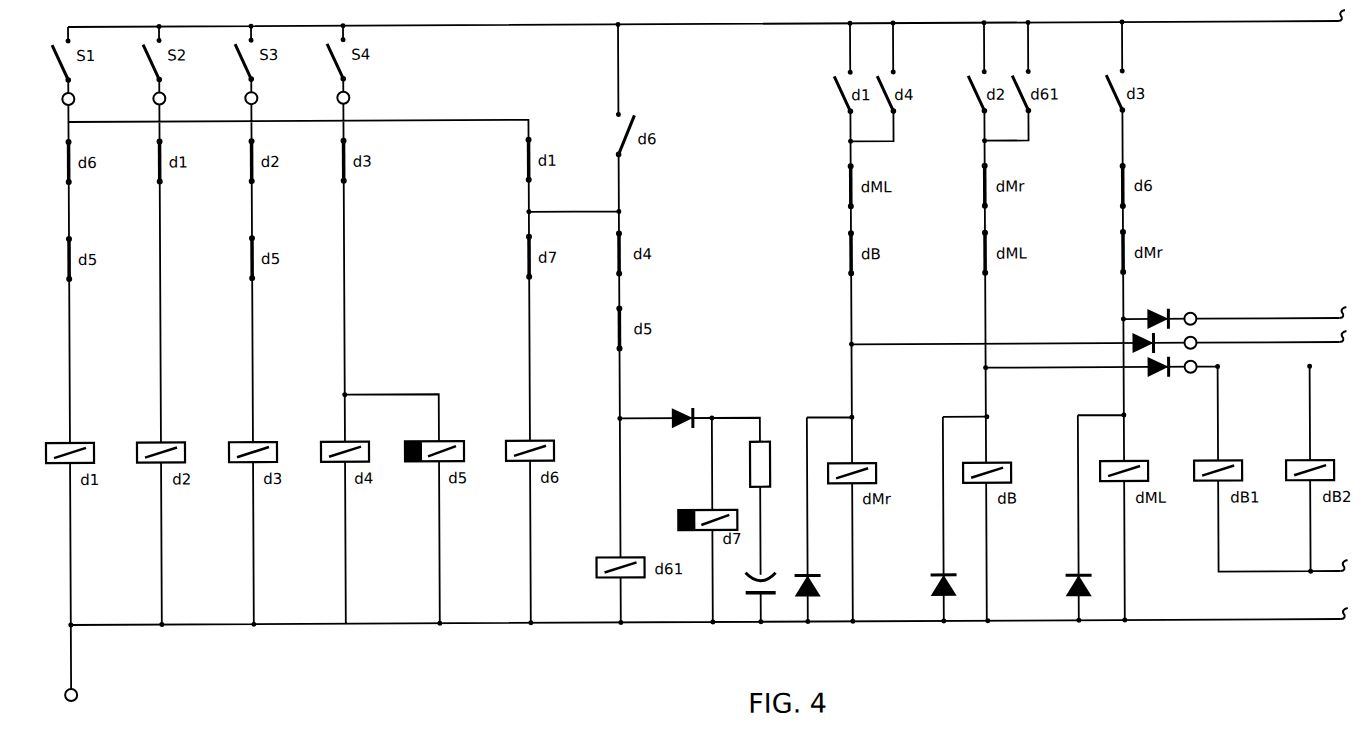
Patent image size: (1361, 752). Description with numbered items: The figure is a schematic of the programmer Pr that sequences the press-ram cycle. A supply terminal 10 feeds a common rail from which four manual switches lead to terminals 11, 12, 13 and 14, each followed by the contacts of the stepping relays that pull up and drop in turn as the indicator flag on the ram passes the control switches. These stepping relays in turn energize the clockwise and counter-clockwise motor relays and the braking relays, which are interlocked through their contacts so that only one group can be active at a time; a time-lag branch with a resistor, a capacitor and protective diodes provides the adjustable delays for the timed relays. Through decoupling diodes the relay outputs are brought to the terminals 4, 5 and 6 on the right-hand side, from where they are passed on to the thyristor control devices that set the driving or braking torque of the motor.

The supply input terminal 10 is at (56, 696).
The switch S1 output terminal 11 is at (79, 100).
The switch S2 output terminal 12 is at (170, 99).
The switch S3 output terminal 13 is at (262, 99).
The switch S4 output terminal 14 is at (354, 99).
The output terminal 4 is at (1201, 359).
The output terminal 5 is at (1261, 335).
The terminal 6 is at (1261, 311).